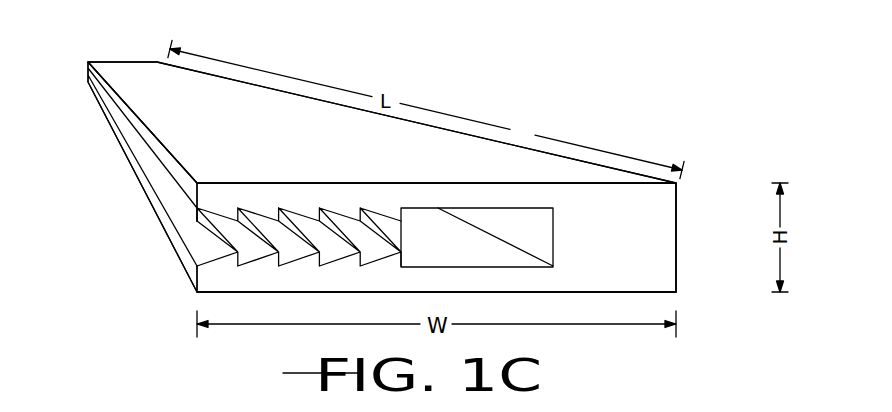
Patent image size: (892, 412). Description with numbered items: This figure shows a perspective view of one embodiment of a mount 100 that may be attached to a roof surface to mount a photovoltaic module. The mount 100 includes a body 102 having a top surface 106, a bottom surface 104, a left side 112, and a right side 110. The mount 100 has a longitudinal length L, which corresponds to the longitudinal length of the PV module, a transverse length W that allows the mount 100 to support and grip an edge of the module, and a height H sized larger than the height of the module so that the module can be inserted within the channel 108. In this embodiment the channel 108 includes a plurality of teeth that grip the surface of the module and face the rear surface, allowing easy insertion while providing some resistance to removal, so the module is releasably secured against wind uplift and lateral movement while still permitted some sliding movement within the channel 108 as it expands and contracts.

The mount 100 is at (648, 112).
The body 102 is at (663, 247).
The bottom surface 104 is at (555, 292).
The top surface 106 is at (513, 146).
The channel 108 is at (193, 226).
The right side 110 is at (677, 191).
The left side 112 is at (143, 192).